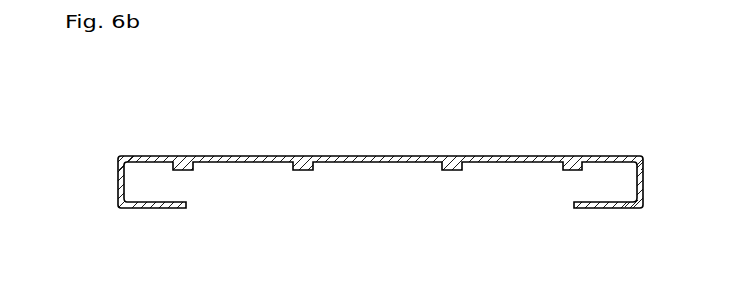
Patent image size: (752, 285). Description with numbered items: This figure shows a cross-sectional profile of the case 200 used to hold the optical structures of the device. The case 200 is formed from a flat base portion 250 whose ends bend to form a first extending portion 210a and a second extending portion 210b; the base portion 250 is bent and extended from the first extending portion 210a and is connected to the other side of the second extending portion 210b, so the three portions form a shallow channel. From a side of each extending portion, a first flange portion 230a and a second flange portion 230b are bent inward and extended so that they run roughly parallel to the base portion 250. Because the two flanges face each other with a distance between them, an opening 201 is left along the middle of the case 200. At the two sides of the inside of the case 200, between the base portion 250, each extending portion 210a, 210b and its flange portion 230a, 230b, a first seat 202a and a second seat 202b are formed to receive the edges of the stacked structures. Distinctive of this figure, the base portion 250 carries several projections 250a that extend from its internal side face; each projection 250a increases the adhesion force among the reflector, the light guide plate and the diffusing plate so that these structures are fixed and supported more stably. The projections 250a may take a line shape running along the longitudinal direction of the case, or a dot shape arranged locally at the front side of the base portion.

The case 200 is at (150, 141).
The opening 201 is at (394, 196).
The first seat 202a is at (595, 186).
The second seat 202b is at (157, 187).
The first extending portion 210a is at (643, 182).
The second extending portion 210b is at (118, 184).
The first flange portion 230a is at (605, 208).
The second flange portion 230b is at (155, 208).
The base portion 250 is at (325, 157).
The projection 250a is at (453, 166).